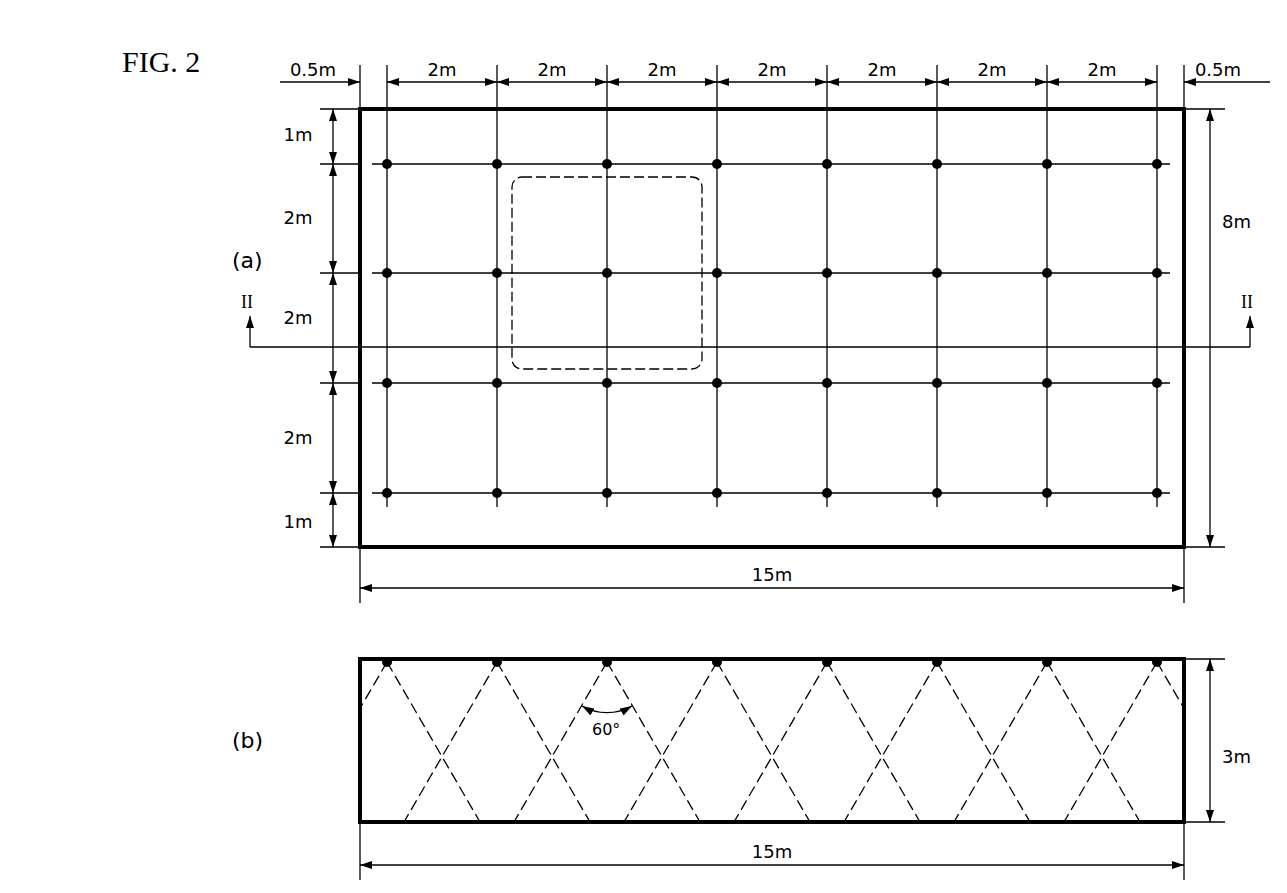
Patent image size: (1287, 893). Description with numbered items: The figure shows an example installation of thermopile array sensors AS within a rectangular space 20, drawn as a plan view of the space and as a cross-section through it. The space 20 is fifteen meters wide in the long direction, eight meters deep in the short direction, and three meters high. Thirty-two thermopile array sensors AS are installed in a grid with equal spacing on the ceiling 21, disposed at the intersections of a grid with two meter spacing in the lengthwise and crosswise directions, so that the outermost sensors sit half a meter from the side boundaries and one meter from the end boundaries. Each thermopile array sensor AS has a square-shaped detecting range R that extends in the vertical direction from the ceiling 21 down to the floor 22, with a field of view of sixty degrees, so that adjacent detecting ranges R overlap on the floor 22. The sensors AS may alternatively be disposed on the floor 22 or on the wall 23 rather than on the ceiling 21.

The space 20 is at (1185, 437).
The ceiling 21 is at (880, 657).
The floor 22 is at (880, 821).
The wall 23 is at (361, 763).
The thermopile array sensor AS is at (610, 270).
The detecting range R is at (702, 312).